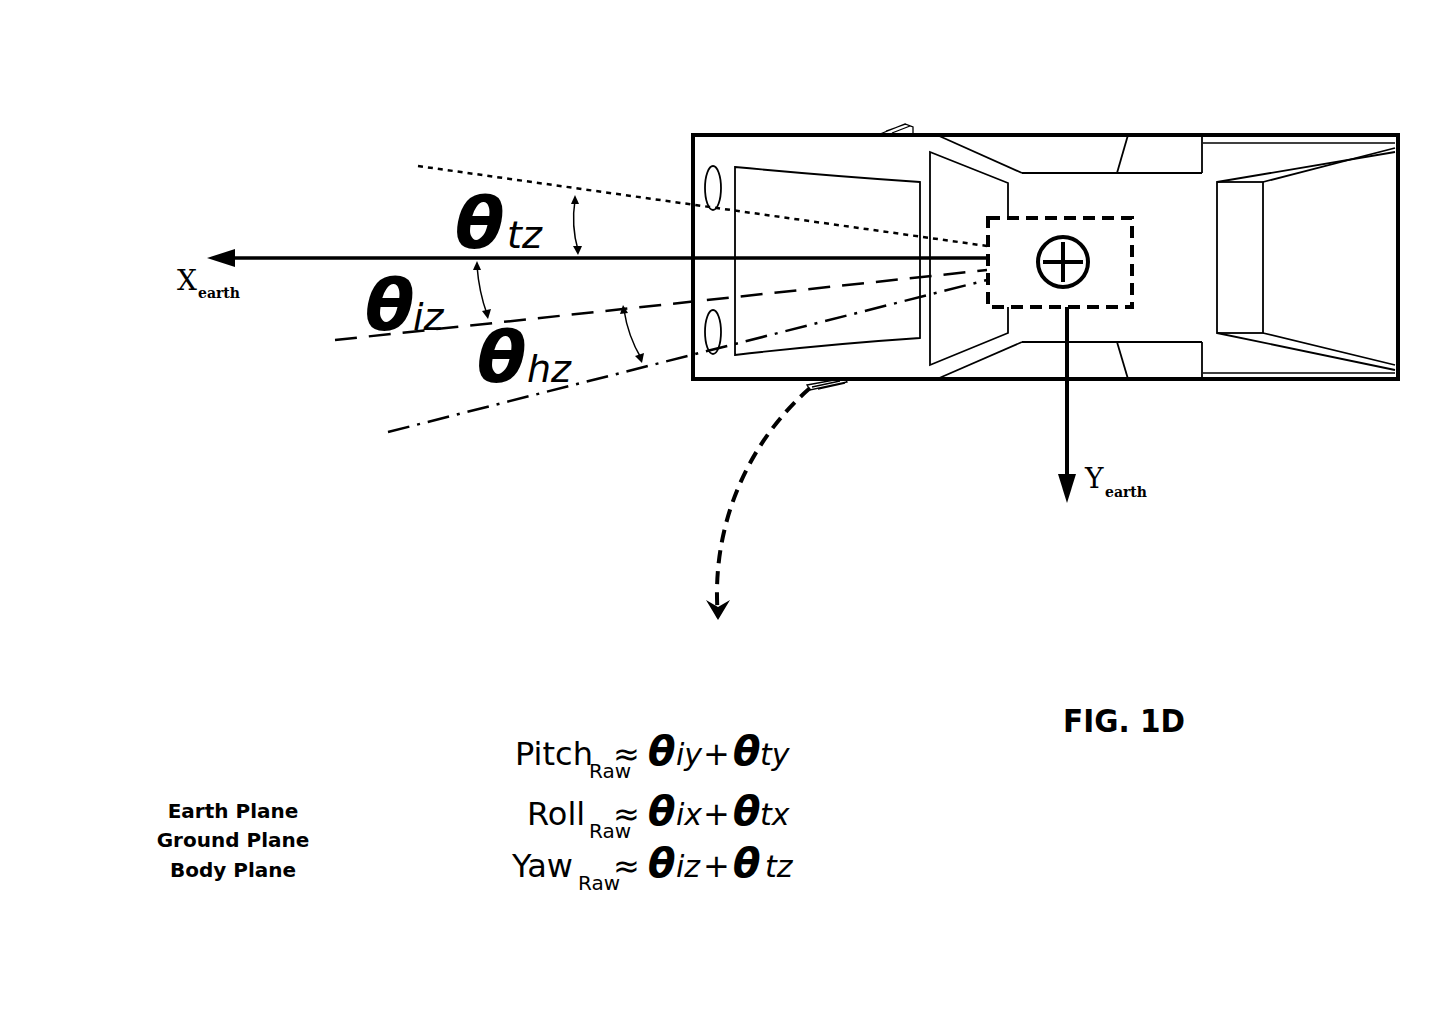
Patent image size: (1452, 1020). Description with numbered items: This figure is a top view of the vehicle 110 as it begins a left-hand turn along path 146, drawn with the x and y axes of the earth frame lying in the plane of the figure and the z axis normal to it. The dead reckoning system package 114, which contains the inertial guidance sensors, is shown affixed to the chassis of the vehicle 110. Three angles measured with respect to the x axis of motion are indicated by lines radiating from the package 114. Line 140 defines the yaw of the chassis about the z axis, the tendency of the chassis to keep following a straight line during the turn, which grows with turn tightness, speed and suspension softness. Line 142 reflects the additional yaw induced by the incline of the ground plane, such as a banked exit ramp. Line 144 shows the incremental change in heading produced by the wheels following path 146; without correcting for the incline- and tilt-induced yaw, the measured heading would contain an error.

The vehicle 110 is at (1365, 148).
The dead reckoning system package 114 is at (1043, 218).
The yaw line 140 is at (433, 166).
The incline-induced yaw line 142 is at (343, 340).
The heading change line 144 is at (433, 425).
The path 146 is at (725, 520).